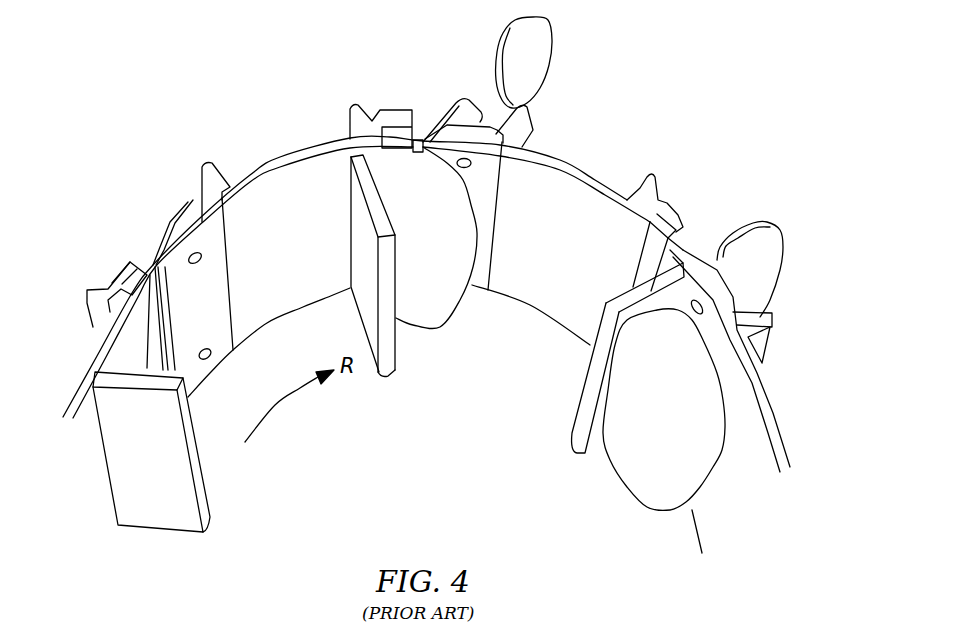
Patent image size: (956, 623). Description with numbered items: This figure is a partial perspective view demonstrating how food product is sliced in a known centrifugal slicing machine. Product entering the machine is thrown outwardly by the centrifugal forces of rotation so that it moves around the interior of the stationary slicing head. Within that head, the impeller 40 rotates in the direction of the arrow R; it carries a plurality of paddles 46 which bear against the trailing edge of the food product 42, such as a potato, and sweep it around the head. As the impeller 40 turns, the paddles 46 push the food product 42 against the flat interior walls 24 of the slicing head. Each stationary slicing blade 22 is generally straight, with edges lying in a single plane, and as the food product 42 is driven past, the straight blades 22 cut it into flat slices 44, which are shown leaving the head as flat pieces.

The stationary slicing blade 22 is at (155, 264).
The flat interior walls 24 is at (300, 257).
The impeller 40 is at (386, 378).
The food product 42 is at (436, 328).
The flat slices 44 is at (553, 42).
The paddles 46 is at (210, 513).